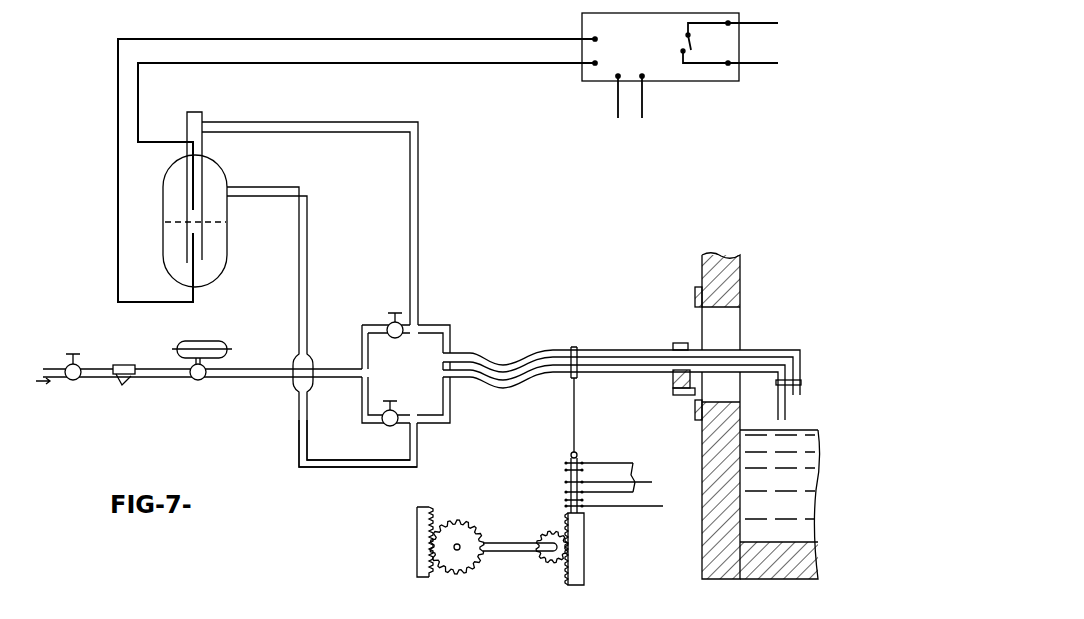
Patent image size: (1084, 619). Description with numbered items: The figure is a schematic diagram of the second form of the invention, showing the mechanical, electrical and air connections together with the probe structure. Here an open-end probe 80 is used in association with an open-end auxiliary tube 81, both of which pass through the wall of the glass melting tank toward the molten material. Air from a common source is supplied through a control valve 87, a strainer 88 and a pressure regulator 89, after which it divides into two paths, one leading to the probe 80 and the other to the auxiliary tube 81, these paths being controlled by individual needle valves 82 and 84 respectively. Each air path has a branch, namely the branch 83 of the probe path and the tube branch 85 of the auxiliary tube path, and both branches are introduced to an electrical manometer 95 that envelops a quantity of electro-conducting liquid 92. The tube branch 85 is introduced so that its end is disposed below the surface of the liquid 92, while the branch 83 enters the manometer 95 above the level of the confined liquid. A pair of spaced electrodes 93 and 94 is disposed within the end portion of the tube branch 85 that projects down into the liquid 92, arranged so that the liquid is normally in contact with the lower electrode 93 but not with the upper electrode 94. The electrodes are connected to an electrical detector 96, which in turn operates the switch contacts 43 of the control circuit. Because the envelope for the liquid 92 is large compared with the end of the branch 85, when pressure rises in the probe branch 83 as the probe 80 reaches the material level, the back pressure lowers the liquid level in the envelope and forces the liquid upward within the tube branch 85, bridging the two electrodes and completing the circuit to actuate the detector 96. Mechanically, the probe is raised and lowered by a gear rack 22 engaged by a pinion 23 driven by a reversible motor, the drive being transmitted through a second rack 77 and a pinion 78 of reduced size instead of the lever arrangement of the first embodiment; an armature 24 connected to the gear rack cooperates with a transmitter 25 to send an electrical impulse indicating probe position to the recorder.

The gear rack 22 is at (430, 512).
The pinion 23 is at (478, 563).
The armature 24 is at (580, 455).
The transmitter 25 is at (568, 492).
The switch contacts 43 is at (693, 44).
The second rack 77 is at (584, 565).
The pinion 78 is at (550, 530).
The open-end probe 80 is at (780, 410).
The open-end auxiliary tube 81 is at (798, 393).
The needle valve 82 is at (385, 425).
The branch 83 is at (330, 468).
The needle valve 84 is at (390, 338).
The tube branch 85 is at (328, 128).
The control valve 87 is at (78, 382).
The strainer 88 is at (123, 386).
The pressure regulator 89 is at (196, 381).
The electro-conducting liquid 92 is at (222, 252).
The lower electrode 93 is at (190, 250).
The upper electrode 94 is at (192, 200).
The electrical manometer 95 is at (222, 172).
The electrical detector 96 is at (582, 81).